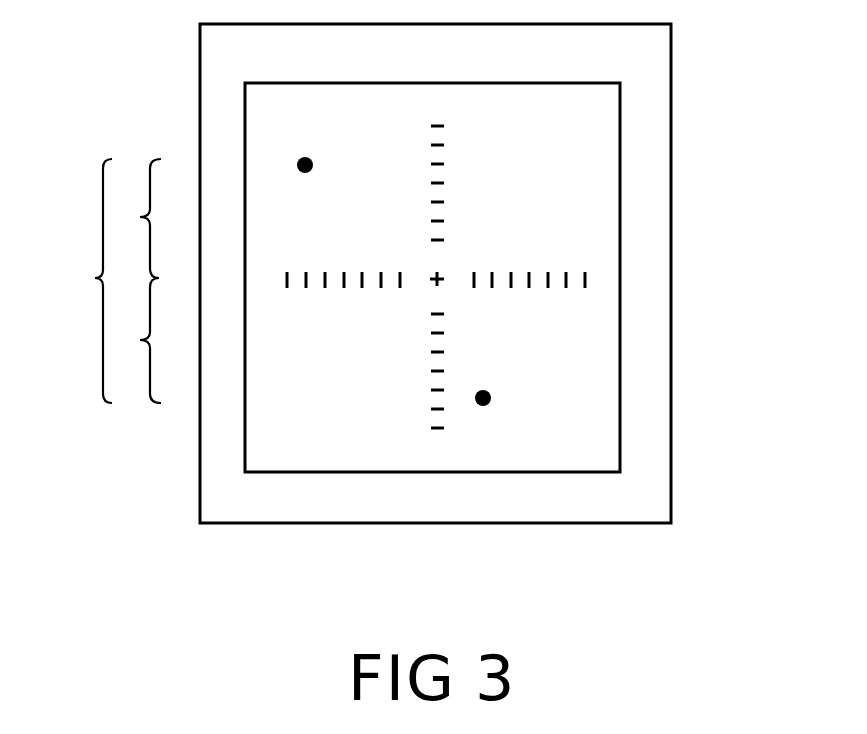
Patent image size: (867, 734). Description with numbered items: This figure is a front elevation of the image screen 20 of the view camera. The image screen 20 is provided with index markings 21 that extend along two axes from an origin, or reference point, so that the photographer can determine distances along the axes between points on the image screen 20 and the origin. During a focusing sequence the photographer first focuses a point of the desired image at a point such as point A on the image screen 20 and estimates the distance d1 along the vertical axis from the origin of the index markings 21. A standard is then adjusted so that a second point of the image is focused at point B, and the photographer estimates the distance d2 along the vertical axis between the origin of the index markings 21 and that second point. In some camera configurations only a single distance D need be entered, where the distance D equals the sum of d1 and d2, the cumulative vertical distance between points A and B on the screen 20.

The image screen 20 is at (145, 532).
The index markings 21 is at (448, 218).
The point A is at (317, 159).
The point B is at (493, 409).
The distance D is at (88, 281).
The distance d1 is at (134, 218).
The distance d2 is at (134, 340).